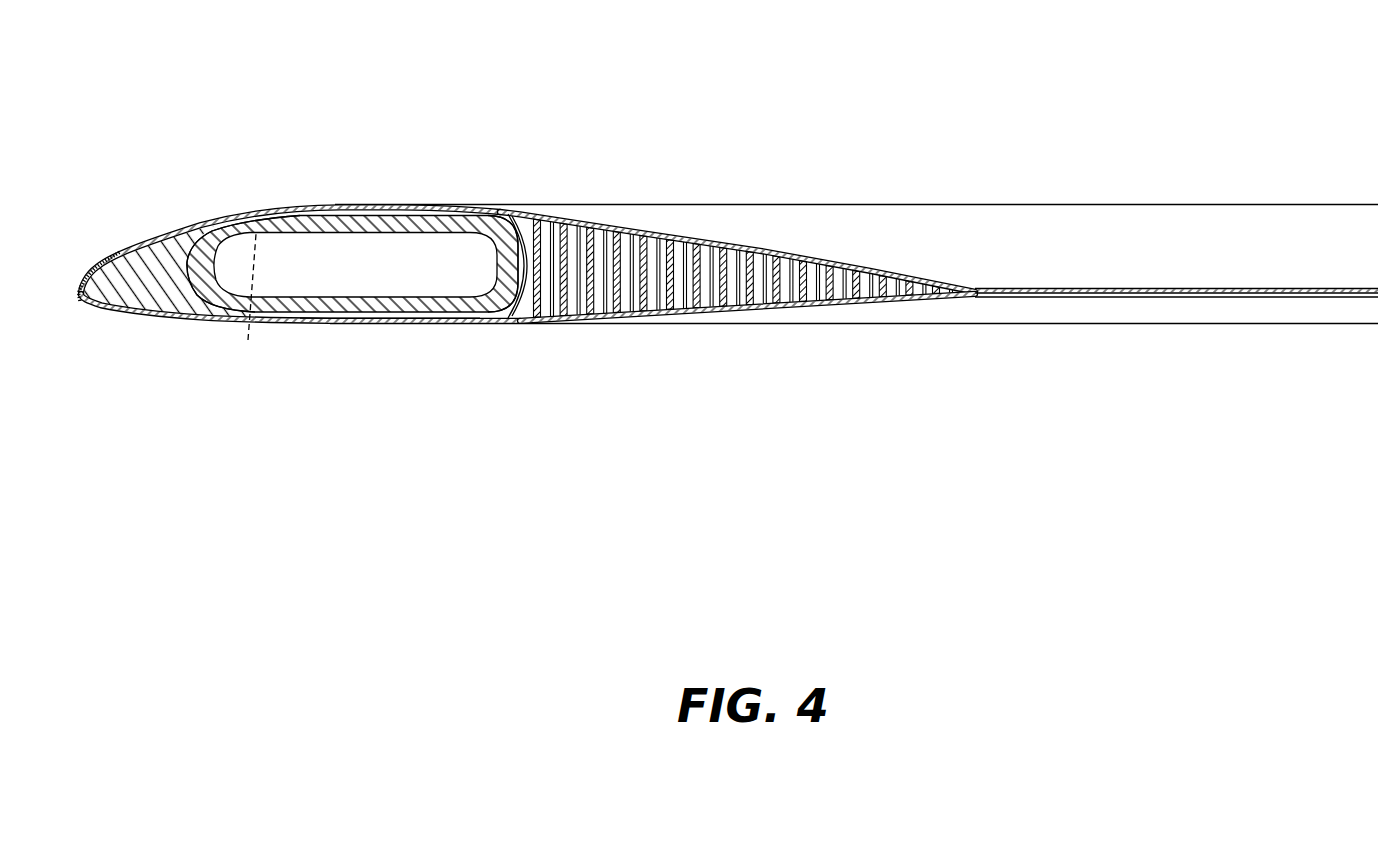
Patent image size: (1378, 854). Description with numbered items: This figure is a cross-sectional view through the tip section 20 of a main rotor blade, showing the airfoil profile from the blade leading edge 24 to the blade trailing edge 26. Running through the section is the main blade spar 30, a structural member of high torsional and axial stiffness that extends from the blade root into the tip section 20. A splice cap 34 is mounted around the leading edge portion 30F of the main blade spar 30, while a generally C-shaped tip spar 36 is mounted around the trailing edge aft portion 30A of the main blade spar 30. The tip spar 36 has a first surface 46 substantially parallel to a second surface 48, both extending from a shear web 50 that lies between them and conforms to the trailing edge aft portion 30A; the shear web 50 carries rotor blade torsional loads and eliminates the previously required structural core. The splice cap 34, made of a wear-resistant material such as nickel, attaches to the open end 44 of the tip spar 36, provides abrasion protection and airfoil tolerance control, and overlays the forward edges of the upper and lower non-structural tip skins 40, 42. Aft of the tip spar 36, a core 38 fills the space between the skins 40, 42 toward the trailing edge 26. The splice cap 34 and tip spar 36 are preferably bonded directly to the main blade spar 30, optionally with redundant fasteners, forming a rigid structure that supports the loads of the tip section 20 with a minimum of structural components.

The tip section 20 is at (507, 118).
The blade leading edge 24 is at (102, 261).
The blade trailing edge 26 is at (1000, 290).
The main blade spar 30 is at (203, 280).
The leading edge portion of the main blade spar 30F is at (233, 230).
The trailing edge aft portion of the main blade spar 30A is at (482, 218).
The splice cap 34 is at (203, 226).
The tip spar 36 is at (335, 320).
The core 38 is at (678, 232).
The upper non-structural tip skin 40 is at (550, 210).
The lower non-structural tip skin 42 is at (652, 320).
The open end of the tip spar 44 is at (239, 301).
The first surface of the tip spar 46 is at (373, 208).
The second surface of the tip spar 48 is at (380, 320).
The shear web 50 is at (525, 278).